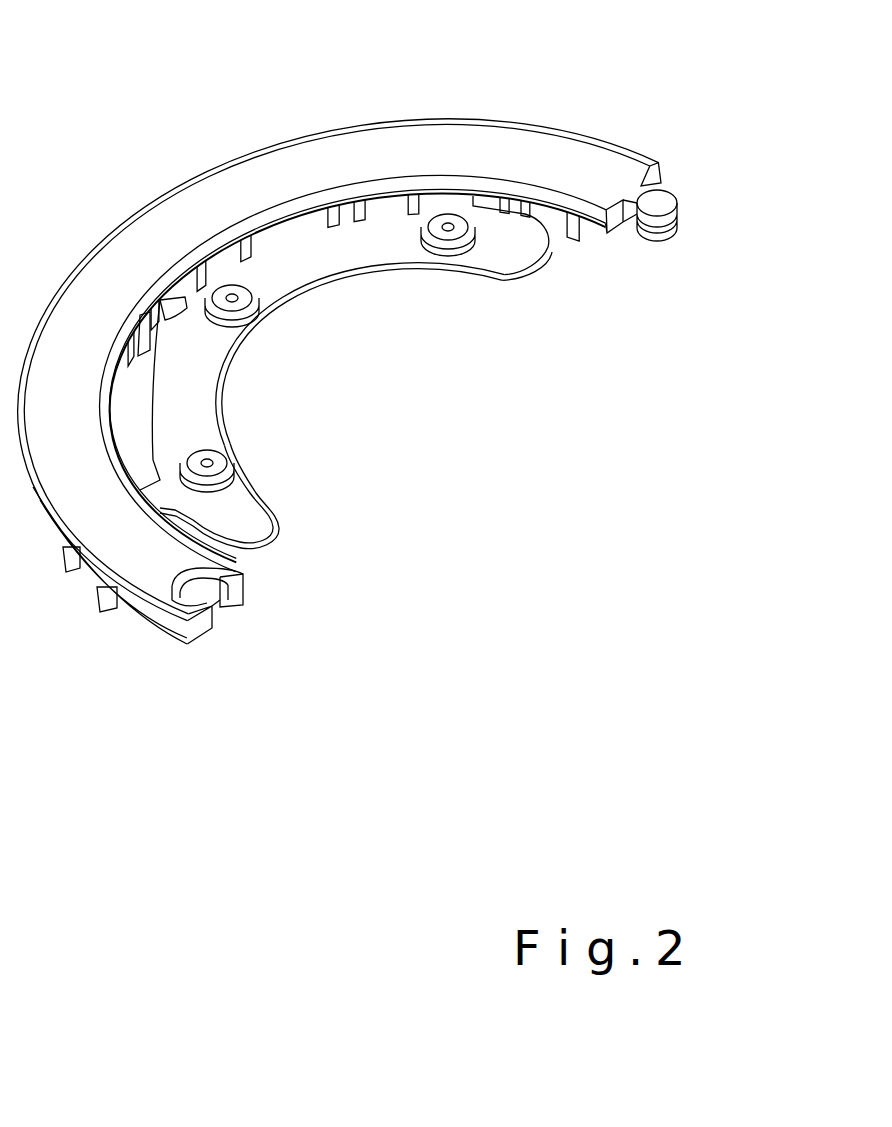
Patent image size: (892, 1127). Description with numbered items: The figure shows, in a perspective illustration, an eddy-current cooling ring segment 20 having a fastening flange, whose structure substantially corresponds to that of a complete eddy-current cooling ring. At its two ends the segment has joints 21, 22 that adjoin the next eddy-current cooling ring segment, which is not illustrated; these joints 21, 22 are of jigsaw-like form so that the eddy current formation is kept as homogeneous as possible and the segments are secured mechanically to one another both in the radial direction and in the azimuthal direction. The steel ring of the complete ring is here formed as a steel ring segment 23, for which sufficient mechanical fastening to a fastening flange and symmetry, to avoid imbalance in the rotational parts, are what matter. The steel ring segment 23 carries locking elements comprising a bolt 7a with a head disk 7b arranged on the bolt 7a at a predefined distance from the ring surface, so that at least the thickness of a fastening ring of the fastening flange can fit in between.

The eddy-current cooling ring segment 20 is at (529, 87).
The joint 21 is at (688, 178).
The joint 22 is at (231, 630).
The steel ring segment 23 is at (292, 270).
The bolt 7a is at (277, 318).
The head disk 7b is at (229, 312).